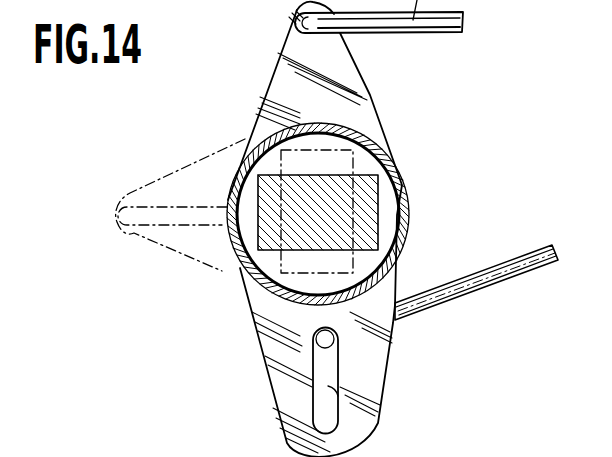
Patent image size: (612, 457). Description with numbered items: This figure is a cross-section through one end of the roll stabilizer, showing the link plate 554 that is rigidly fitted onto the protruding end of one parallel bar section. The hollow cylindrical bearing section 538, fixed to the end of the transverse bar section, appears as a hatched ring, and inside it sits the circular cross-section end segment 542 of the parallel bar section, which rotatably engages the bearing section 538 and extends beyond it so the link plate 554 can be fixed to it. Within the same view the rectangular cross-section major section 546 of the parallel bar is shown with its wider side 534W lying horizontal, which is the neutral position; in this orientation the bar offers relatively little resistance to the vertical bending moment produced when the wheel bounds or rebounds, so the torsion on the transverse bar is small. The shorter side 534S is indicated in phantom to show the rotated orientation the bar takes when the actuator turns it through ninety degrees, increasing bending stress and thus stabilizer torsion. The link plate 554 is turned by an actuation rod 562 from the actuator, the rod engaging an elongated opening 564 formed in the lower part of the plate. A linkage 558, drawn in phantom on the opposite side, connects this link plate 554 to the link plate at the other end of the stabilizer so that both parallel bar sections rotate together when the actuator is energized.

The link plate 554 is at (343, 75).
The linkage 558 is at (172, 226).
The hollow cylindrical bearing section 538 is at (404, 226).
The end segment 542 is at (370, 260).
The rectangular cross-section major section 546 is at (343, 230).
The shorter side 534S is at (342, 150).
The wider side 534W is at (334, 177).
The actuation rod 562 is at (485, 281).
The elongated opening 564 is at (330, 395).